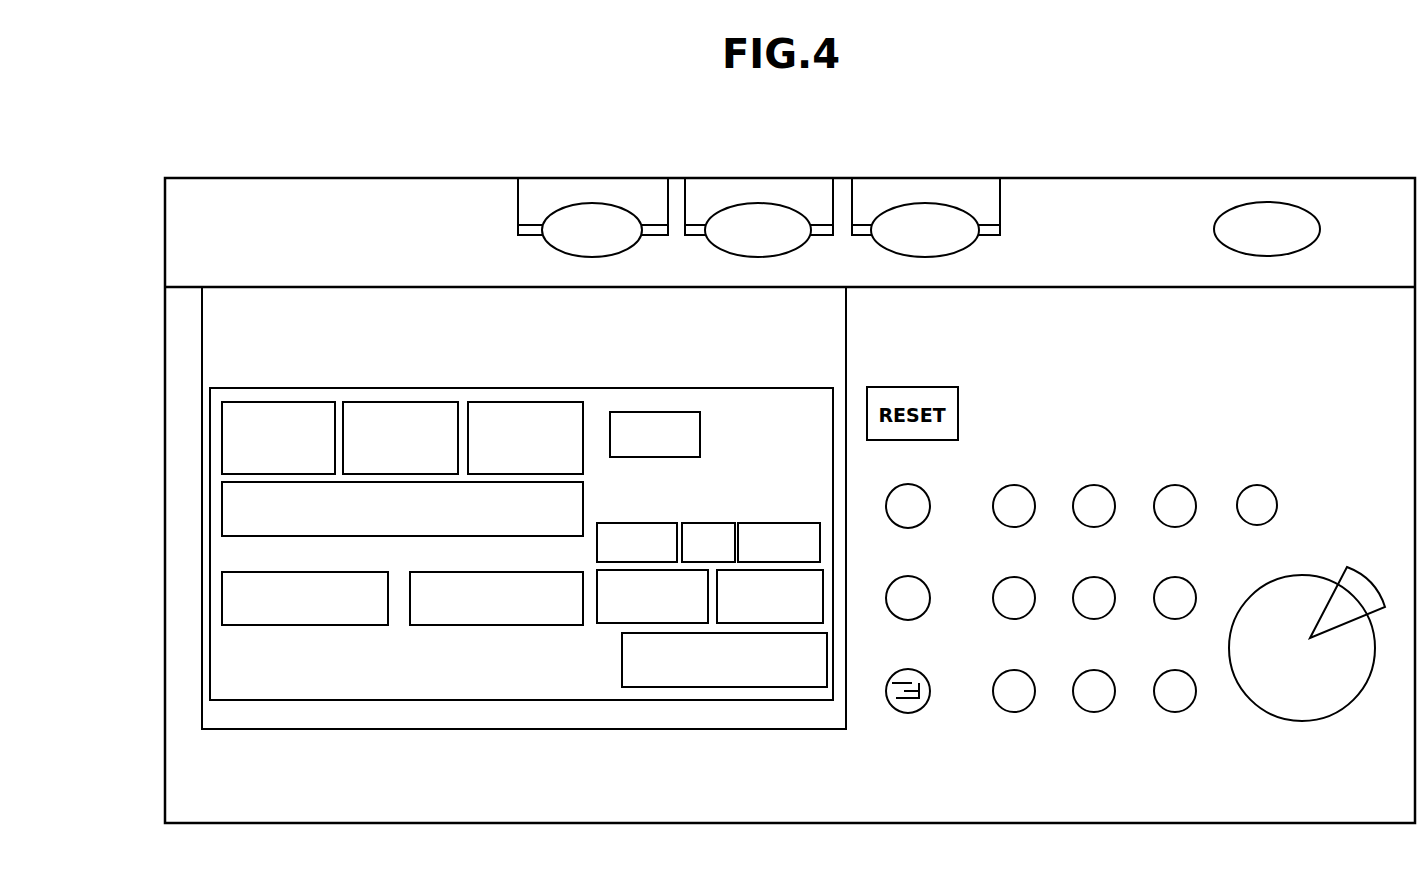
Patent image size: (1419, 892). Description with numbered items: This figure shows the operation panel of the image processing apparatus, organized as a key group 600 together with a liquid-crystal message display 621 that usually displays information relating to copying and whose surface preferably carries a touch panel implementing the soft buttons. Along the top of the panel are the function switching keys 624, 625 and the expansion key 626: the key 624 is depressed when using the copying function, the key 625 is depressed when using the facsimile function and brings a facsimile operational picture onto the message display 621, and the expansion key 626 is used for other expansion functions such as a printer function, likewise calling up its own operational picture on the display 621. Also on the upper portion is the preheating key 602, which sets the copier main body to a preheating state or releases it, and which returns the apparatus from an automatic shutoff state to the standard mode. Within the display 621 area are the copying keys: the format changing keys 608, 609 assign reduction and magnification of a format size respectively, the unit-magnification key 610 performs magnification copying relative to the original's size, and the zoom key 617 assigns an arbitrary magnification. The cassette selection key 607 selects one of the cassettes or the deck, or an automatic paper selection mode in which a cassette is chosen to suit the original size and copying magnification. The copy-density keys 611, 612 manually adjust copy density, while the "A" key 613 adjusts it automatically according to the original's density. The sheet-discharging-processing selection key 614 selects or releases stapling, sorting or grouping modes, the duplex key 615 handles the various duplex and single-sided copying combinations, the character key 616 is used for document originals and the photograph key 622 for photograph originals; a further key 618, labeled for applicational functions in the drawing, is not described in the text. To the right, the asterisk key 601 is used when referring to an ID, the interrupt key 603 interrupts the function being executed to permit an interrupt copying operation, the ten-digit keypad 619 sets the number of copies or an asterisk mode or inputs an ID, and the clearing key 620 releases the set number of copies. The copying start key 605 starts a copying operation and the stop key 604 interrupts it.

The key group 600 is at (1178, 823).
The asterisk key 601 is at (895, 617).
The preheating key 602 is at (1271, 214).
The interrupt key 603 is at (910, 713).
The stop key 604 is at (1355, 585).
The copying start key 605 is at (1297, 705).
The cassette selection key 607 is at (702, 440).
The format changing key 608 is at (222, 437).
The format changing key 609 is at (477, 400).
The unit-magnification key 610 is at (350, 402).
The copy-density key 611 is at (636, 523).
The copy-density key 612 is at (768, 523).
The "A" key 613 is at (708, 523).
The sheet-discharging-processing selection key 614 is at (298, 625).
The duplex key 615 is at (513, 625).
The character key 616 is at (607, 625).
The zoom key 617 is at (222, 517).
The applicational function key 618 is at (733, 687).
The ten-digit keypad 619 is at (1053, 690).
The clearing key 620 is at (1263, 485).
The message display 621 is at (407, 729).
The photograph key 622 is at (823, 605).
The function switching key 624 is at (581, 203).
The function switching key 625 is at (762, 203).
The expansion key 626 is at (931, 203).